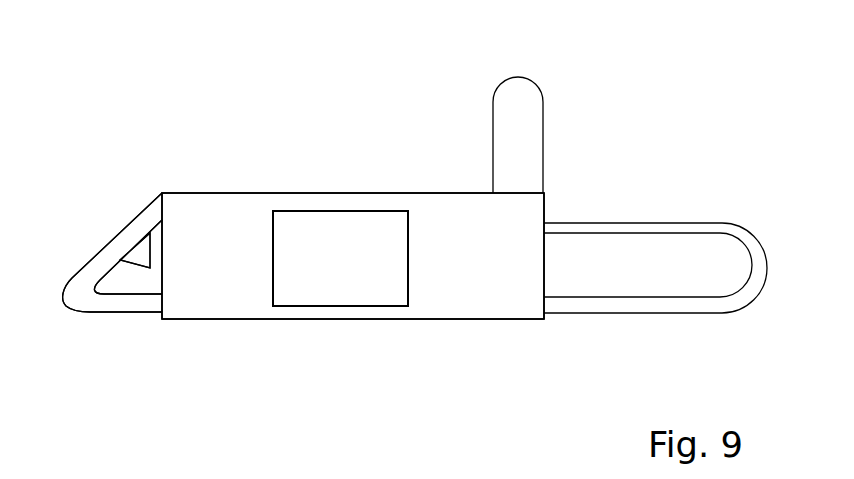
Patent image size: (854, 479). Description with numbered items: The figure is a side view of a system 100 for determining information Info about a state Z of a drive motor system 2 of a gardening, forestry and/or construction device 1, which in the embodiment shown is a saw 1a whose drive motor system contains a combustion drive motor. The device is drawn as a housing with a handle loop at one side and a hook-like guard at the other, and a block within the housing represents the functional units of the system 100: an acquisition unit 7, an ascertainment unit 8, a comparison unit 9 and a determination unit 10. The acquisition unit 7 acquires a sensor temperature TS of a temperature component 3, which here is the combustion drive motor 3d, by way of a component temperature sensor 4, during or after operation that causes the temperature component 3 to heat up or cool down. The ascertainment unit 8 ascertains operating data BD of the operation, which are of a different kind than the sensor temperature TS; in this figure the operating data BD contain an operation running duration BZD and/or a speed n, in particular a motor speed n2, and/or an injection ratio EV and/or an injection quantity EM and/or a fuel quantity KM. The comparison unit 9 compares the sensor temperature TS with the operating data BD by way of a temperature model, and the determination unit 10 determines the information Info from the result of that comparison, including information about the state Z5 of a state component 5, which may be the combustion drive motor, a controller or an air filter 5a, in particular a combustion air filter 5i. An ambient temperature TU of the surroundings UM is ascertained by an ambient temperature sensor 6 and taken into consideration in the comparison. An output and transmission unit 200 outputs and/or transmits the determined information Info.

The system 100 is at (190, 115).
The gardening, forestry and/or construction device 1 is at (168, 343).
The saw 1a is at (353, 256).
The state component 5 is at (297, 211).
The air filter 5a is at (340, 258).
The combustion air filter 5i is at (340, 258).
The acquisition unit 7 is at (337, 211).
The ascertainment unit 8 is at (340, 258).
The comparison unit 9 is at (340, 258).
The determination unit 10 is at (340, 258).
The drive motor system 2 is at (298, 306).
The component temperature sensor 4 is at (313, 306).
The temperature component 3 is at (340, 306).
The combustion drive motor 3d is at (340, 258).
The output and transmission unit 200 is at (363, 306).
The ambient temperature sensor 6 is at (392, 306).
The ambient temperature TU is at (82, 158).
The surroundings UM is at (155, 158).
The operating data BD is at (319, 211).
The operation running duration BZD is at (340, 258).
The speed n is at (340, 258).
The motor speed n2 is at (340, 258).
The injection ratio EV is at (340, 258).
The injection quantity EM is at (340, 258).
The fuel quantity KM is at (340, 258).
The state Z is at (278, 306).
The state of the state component Z5 is at (340, 258).
The sensor temperature TS is at (353, 306).
The information Info is at (405, 306).